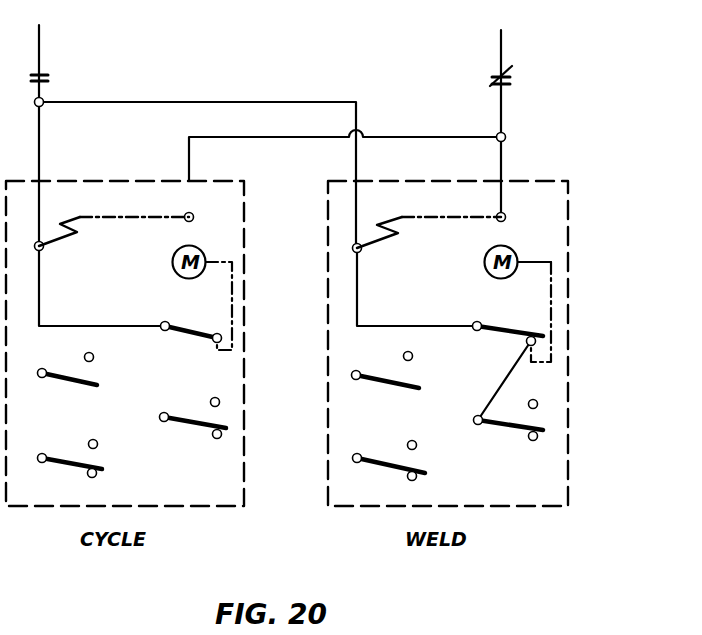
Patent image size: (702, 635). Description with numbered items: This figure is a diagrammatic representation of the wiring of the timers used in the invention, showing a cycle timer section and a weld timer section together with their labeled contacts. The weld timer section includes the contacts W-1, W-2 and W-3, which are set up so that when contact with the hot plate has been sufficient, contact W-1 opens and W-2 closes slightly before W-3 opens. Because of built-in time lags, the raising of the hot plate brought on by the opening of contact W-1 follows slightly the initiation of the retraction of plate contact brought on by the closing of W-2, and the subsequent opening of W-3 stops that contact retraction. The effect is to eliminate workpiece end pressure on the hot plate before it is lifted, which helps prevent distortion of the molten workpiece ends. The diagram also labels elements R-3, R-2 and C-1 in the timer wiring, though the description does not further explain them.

The cycle timing resistor R-3 is at (61, 78).
The weld timing variable resistor R-2 is at (523, 78).
The cycle relay contacts C-1 is at (220, 405).
The contact W-3 is at (484, 322).
The contact W-2 is at (543, 418).
The contact W-1 is at (552, 413).